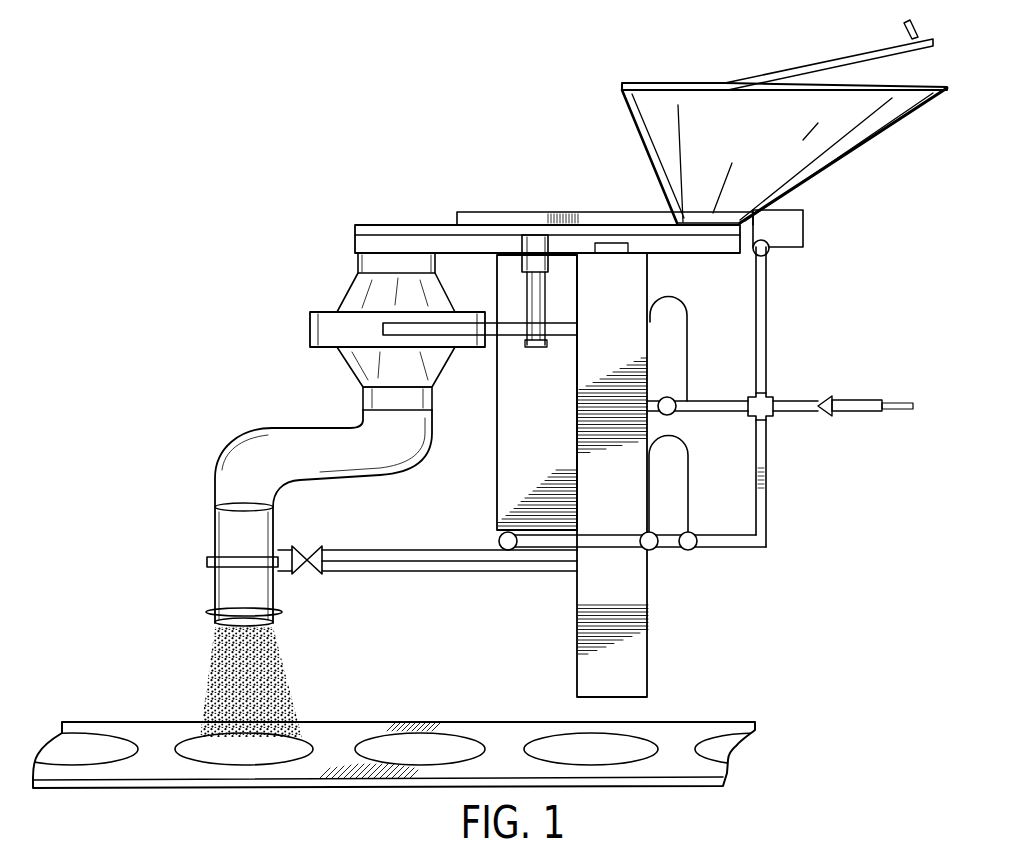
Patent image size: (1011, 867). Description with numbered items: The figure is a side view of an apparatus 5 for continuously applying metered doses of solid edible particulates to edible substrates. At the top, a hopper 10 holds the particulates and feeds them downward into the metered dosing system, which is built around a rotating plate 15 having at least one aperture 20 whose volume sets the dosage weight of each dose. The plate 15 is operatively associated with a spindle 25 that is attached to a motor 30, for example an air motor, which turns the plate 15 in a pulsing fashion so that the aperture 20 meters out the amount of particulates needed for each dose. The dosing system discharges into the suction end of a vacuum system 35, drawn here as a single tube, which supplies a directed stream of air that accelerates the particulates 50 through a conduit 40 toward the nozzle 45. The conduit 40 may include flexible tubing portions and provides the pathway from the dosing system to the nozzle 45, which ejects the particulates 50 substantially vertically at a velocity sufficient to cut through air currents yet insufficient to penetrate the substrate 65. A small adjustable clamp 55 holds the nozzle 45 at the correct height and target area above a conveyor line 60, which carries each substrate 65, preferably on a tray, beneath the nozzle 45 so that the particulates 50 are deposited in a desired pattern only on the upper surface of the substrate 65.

The apparatus 5 is at (898, 315).
The hopper 10 is at (857, 120).
The rotating plate 15 is at (742, 236).
The aperture 20 is at (396, 223).
The spindle 25 is at (543, 290).
The motor 30 is at (510, 458).
The vacuum system 35 is at (309, 298).
The conduit 40 is at (255, 455).
The nozzle 45 is at (268, 590).
The particulates 50 is at (270, 667).
The adjustable clamp 55 is at (467, 572).
The conveyor line 60 is at (684, 730).
The substrate 65 is at (186, 743).